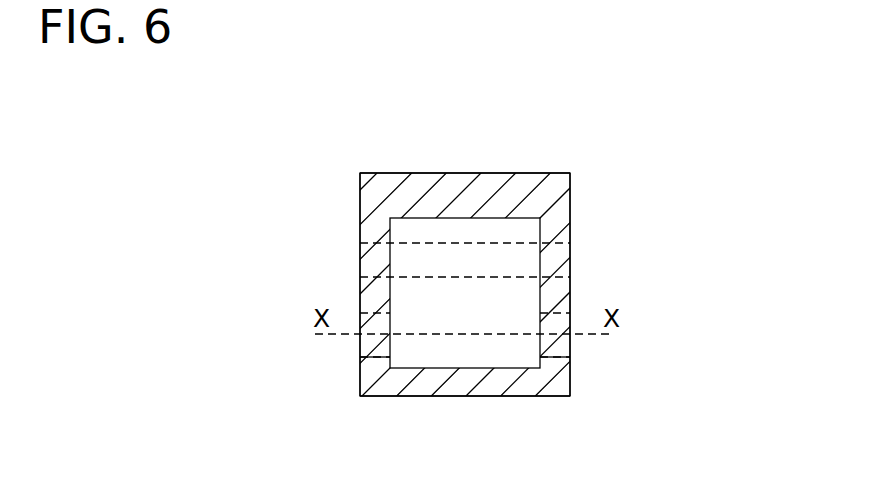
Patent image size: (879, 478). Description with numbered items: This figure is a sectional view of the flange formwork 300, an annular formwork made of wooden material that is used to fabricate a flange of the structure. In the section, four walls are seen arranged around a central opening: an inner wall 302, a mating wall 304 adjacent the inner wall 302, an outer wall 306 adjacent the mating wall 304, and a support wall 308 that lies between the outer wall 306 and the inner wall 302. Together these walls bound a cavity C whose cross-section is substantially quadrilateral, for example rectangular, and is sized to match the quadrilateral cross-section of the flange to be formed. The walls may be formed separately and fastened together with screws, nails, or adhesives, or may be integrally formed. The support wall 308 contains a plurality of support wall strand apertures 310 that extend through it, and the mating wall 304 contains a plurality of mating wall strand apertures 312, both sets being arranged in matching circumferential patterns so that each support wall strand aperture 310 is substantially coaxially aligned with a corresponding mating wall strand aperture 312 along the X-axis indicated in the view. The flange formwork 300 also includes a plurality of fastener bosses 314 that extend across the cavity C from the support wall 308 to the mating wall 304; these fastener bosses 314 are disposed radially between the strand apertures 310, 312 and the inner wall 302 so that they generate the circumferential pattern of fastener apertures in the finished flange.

The flange formwork 300 is at (630, 132).
The inner wall 302 is at (440, 172).
The mating wall 304 is at (360, 207).
The outer wall 306 is at (470, 396).
The support wall 308 is at (570, 208).
The support wall strand apertures 310 is at (570, 357).
The mating wall strand apertures 312 is at (362, 357).
The fastener bosses 314 is at (460, 260).
The cavity C is at (500, 300).